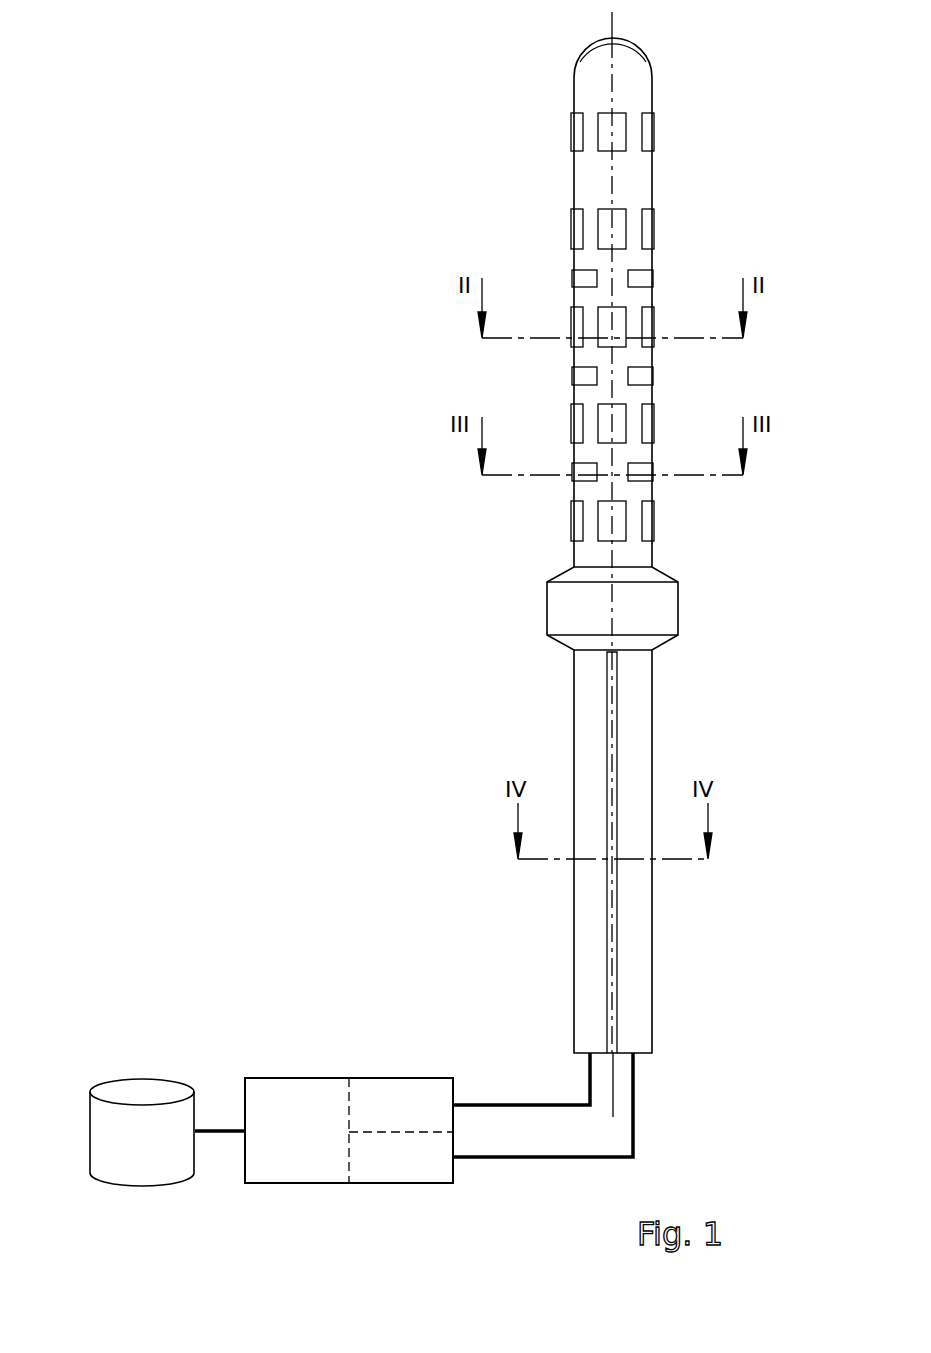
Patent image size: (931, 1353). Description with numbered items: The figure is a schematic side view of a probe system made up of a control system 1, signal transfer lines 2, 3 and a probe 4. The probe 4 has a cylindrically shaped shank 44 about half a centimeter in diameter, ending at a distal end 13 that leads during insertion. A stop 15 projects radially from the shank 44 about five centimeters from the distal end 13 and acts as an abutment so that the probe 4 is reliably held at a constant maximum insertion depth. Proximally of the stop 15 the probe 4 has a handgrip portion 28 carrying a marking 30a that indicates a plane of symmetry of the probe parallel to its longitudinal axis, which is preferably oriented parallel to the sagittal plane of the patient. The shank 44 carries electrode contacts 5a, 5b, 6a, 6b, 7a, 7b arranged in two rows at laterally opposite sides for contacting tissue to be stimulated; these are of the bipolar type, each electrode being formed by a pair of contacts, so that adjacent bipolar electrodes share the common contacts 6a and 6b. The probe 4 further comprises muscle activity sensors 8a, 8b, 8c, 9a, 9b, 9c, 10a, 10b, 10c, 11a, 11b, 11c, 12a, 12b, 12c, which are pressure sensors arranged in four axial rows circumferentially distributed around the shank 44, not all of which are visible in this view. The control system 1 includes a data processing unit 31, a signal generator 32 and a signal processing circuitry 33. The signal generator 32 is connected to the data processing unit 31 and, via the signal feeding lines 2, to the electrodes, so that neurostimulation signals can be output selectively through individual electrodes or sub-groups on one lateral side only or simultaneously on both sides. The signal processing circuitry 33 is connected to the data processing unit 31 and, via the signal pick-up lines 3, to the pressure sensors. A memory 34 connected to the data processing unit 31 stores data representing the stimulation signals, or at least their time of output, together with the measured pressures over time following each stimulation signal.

The control system 1 is at (188, 1025).
The signal feeding lines 2 is at (493, 1104).
The signal pick-up lines 3 is at (493, 1159).
The probe 4 is at (720, 143).
The electrode contact 5a is at (575, 277).
The electrode contact 5b is at (650, 277).
The electrode contact 6a is at (575, 375).
The electrode contact 6b is at (650, 375).
The electrode contact 7a is at (575, 470).
The electrode contact 7b is at (650, 470).
The muscle activity sensor 8a is at (576, 133).
The muscle activity sensor 8b is at (622, 117).
The muscle activity sensor 8c is at (649, 132).
The muscle activity sensor 9a is at (576, 230).
The muscle activity sensor 9b is at (622, 213).
The muscle activity sensor 9c is at (649, 229).
The muscle activity sensor 10a is at (576, 328).
The muscle activity sensor 10b is at (620, 311).
The muscle activity sensor 10c is at (650, 328).
The muscle activity sensor 11a is at (576, 425).
The muscle activity sensor 11b is at (620, 408).
The muscle activity sensor 11c is at (650, 425).
The muscle activity sensor 12a is at (576, 535).
The muscle activity sensor 12b is at (620, 518).
The muscle activity sensor 12c is at (650, 535).
The distal end 13 is at (641, 38).
The stop 15 is at (678, 608).
The handgrip portion 28 is at (652, 913).
The marking 30a is at (612, 967).
The data processing unit 31 is at (613, 1102).
The signal generator 32 is at (414, 1119).
The signal processing circuitry 33 is at (414, 1171).
The memory 34 is at (156, 1146).
The shank 44 is at (570, 168).